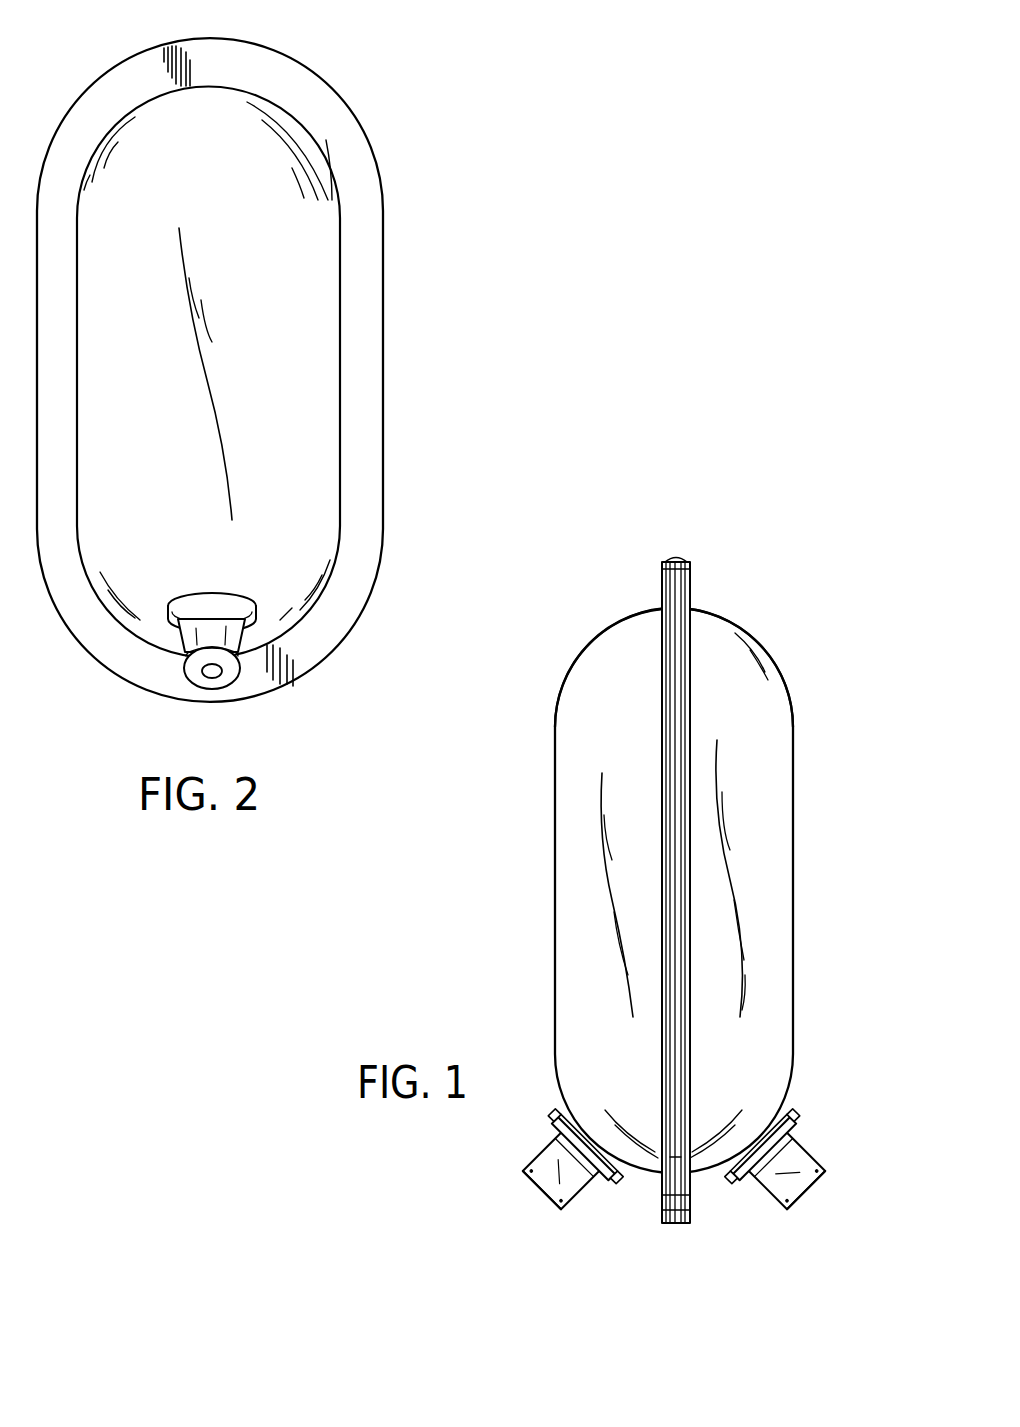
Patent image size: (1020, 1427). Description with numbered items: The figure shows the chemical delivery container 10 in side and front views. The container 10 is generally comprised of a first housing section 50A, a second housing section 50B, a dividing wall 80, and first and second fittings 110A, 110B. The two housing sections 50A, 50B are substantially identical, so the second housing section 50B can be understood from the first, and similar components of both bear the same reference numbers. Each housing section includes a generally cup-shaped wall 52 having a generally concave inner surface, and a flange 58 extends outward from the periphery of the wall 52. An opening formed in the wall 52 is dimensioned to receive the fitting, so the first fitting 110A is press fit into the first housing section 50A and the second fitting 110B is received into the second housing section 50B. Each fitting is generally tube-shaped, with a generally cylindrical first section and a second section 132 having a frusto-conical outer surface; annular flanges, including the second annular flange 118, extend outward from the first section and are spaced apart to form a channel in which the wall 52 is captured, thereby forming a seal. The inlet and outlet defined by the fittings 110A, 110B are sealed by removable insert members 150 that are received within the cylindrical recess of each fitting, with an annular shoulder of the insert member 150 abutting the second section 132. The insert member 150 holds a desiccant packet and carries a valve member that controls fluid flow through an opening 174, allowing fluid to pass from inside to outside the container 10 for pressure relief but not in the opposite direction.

In FIG. 2, the chemical delivery container 10 is at (255, 387).
In FIG. 1, the chemical delivery container 10 is at (672, 885).
In FIG. 2, the first housing section 50A is at (333, 313).
In FIG. 1, the first housing section 50A is at (565, 677).
In FIG. 1, the second housing section 50B is at (785, 677).
In FIG. 2, the wall 52 is at (290, 398).
In FIG. 1, the wall 52 is at (568, 837).
In FIG. 2, the flange 58 is at (365, 490).
In FIG. 1, the flange 58 is at (660, 597).
In FIG. 1, the dividing wall 80 is at (673, 553).
In FIG. 2, the first fitting 110A is at (250, 640).
In FIG. 1, the first fitting 110A is at (540, 1151).
In FIG. 1, the second fitting 110B is at (819, 1162).
In FIG. 2, the second annular flange 118 is at (227, 597).
In FIG. 2, the second section 132 is at (233, 643).
In FIG. 2, the insert member 150 is at (233, 680).
In FIG. 2, the opening 174 is at (212, 678).